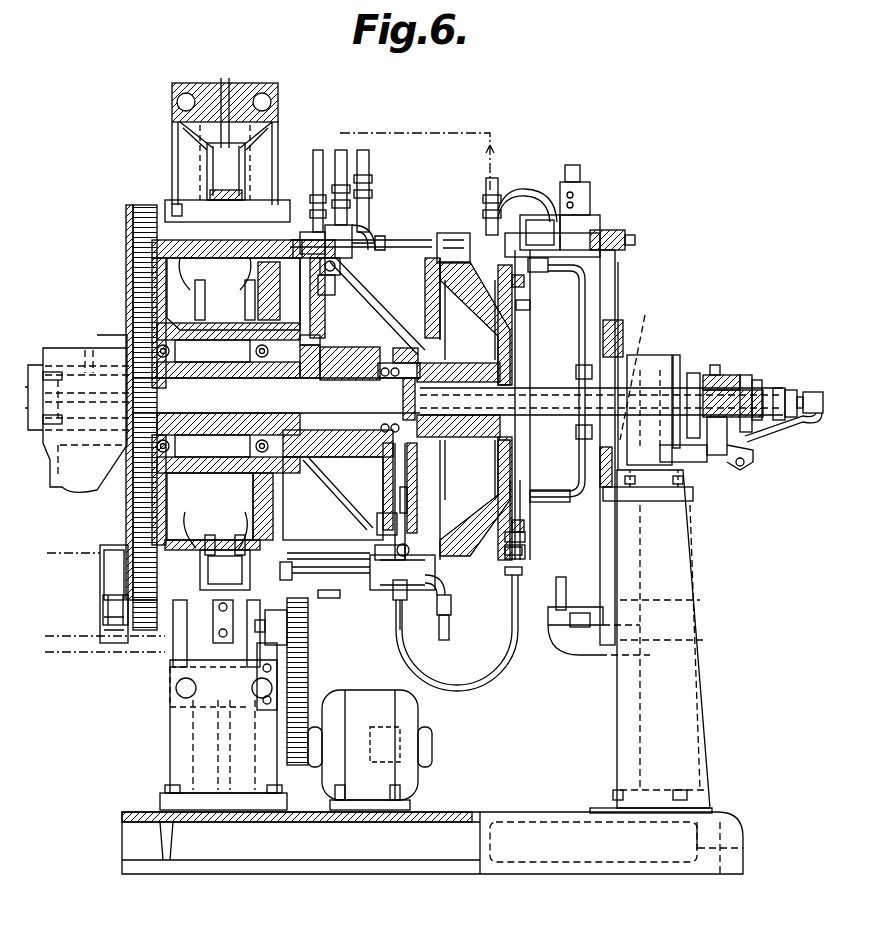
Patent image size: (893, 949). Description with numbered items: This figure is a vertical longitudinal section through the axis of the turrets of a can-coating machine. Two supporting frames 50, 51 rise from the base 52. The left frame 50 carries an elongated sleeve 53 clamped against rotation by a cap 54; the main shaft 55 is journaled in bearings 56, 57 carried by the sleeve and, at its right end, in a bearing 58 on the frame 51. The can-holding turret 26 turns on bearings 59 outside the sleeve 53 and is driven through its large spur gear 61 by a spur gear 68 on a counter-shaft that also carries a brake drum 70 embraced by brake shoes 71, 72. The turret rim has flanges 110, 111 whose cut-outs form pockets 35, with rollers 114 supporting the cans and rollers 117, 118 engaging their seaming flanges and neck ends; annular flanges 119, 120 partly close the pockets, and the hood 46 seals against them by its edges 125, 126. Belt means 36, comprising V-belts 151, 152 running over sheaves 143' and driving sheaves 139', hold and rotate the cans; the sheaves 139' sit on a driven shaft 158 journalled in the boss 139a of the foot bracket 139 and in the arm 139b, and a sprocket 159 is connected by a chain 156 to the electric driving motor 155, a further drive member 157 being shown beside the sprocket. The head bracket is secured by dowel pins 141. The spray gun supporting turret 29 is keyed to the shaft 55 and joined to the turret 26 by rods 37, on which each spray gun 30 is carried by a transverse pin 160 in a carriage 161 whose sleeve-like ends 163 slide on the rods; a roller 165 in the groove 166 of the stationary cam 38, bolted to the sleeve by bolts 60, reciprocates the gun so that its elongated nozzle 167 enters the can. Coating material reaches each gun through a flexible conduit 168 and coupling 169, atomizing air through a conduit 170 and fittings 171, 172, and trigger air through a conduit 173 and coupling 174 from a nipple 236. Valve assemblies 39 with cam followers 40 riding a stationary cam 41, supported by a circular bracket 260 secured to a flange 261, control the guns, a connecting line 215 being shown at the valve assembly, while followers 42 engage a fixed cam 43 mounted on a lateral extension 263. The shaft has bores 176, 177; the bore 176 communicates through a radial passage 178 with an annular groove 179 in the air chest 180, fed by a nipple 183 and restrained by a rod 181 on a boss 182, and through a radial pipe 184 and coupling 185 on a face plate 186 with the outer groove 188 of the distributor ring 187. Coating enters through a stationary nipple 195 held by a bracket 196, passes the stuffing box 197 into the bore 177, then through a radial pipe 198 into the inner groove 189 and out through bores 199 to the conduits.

The dowel pins 141 is at (176, 97).
The sheaves 143' is at (228, 117).
The belt means 36 is at (205, 168).
The hood 46 is at (165, 154).
The semi-circular inner edge 125 is at (178, 200).
The rollers 118 is at (175, 208).
The pockets 35 is at (245, 212).
The annular flange 119 is at (148, 208).
The large spur gear 61 is at (142, 258).
The V-belt 152 is at (148, 622).
The spur gear 68 is at (138, 625).
The brake shoe 72 is at (112, 645).
The brake drum 70 is at (105, 565).
The brake shoe 71 is at (112, 548).
The cap 54 is at (62, 355).
The bearing 56 is at (50, 447).
The supporting frame 50 is at (67, 470).
The can-holding turret 26 is at (185, 300).
The bearings 59 is at (258, 340).
The outwardly projecting flange 110 is at (197, 403).
The outwardly projecting flange 111 is at (245, 404).
The rollers 114 is at (248, 305).
The rollers 117 is at (262, 290).
The main shaft 55 is at (330, 440).
The stationary cam 38 is at (355, 288).
The spray gun supporting turret 29 is at (460, 400).
The sleeve 53 is at (338, 365).
The bearing 57 is at (388, 352).
The bolts 60 is at (312, 338).
The annular groove 189 is at (500, 330).
The nipple 236 is at (482, 222).
The rods 37 is at (413, 243).
The transverse pin 160 is at (350, 232).
The sleeve-like ends 163 is at (380, 250).
The carriage 161 is at (340, 268).
The cam following roller 165 is at (335, 285).
The groove 166 is at (408, 490).
The coupling 169 is at (316, 200).
The annular flange 120 is at (310, 215).
The semi-circular inner edge 126 is at (280, 180).
The flexible conduit 168 is at (345, 152).
The flexible conduit 173 is at (345, 150).
The coupling 174 is at (348, 180).
The flexible conduit 170 is at (368, 172).
The fitting 171 is at (370, 192).
The spray guns 30 is at (362, 225).
The elongated nozzle 167 is at (300, 562).
The V-belt 151 is at (372, 575).
The driven shaft 158 is at (312, 600).
The bracket 157 is at (290, 620).
The sprocket 159 is at (290, 634).
The chain 156 is at (308, 668).
The hose 215 is at (535, 200).
The gun-controlling valve assemblies 39 is at (544, 204).
The cam follower 40 is at (580, 212).
The cam follower 42 is at (582, 172).
The stationary cam 41 is at (600, 230).
The face plate 186 is at (550, 266).
The annular groove 188 is at (518, 280).
The coupling 185 is at (575, 322).
The distributor ring 187 is at (530, 303).
The radial pipe 198 is at (580, 482).
The bores 199 is at (512, 535).
The fitting 172 is at (512, 552).
The circular bracket 260 is at (618, 262).
The radial pipe 184 is at (622, 295).
The flange 261 is at (640, 320).
The longitudinal bore 176 is at (628, 340).
The bearing 58 is at (660, 350).
The longitudinal bore 177 is at (692, 375).
The air chest 180 is at (712, 372).
The annular groove 179 is at (735, 360).
The radial passage 178 is at (746, 372).
The nipple 183 is at (756, 378).
The stuffing box 197 is at (780, 387).
The stationary nipple 195 is at (822, 392).
The bracket 196 is at (790, 445).
The rod 181 is at (690, 457).
The boss 182 is at (664, 480).
The supporting frame 51 is at (690, 560).
The fixed cam 43 is at (556, 610).
The lateral extension 263 is at (590, 645).
The electric driving motor 155 is at (400, 712).
The foot bracket 139 is at (223, 781).
The boss 139a is at (185, 635).
The sheaves 139' is at (186, 658).
The arm 139b is at (262, 655).
The base 52 is at (740, 826).